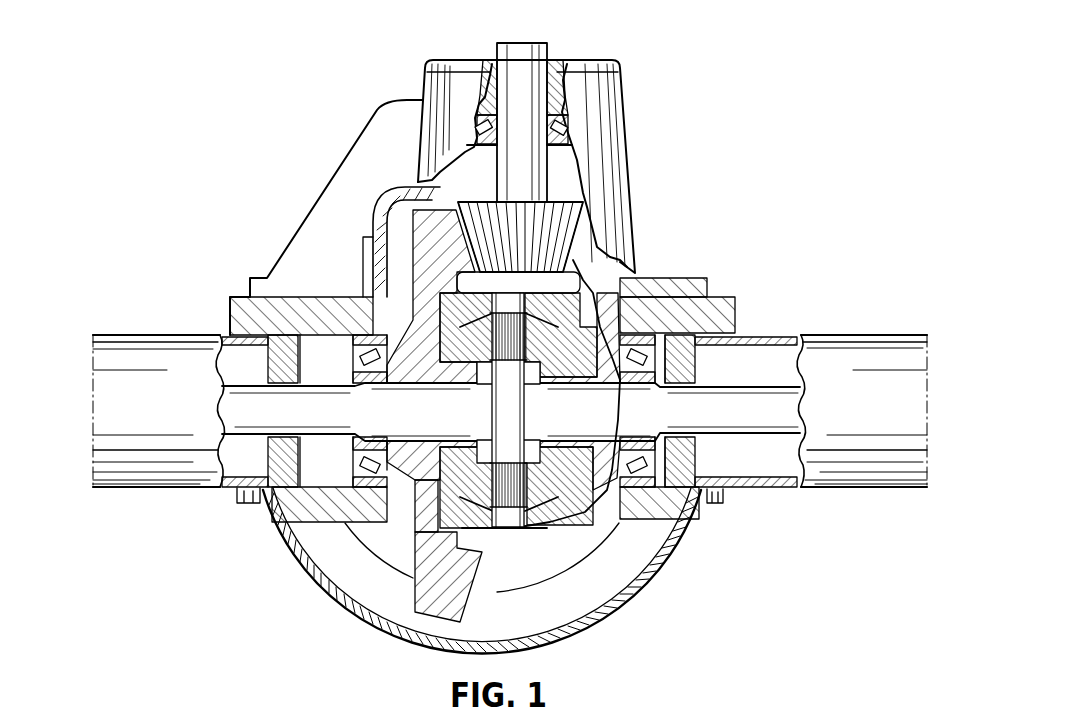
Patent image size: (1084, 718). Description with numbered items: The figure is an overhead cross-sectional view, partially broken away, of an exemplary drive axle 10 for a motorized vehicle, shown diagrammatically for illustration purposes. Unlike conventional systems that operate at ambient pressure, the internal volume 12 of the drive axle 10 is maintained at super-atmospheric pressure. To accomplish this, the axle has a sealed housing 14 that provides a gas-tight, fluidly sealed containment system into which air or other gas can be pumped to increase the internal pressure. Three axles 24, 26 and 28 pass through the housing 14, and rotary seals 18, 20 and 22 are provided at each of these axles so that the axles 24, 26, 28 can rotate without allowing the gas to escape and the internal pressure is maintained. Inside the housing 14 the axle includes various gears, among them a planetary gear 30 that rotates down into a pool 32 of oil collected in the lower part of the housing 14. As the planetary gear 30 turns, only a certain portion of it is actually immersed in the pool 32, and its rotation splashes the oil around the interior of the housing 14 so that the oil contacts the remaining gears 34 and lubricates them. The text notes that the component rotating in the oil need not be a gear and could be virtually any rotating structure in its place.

The drive axle 10 is at (726, 198).
The internal volume 12 is at (614, 594).
The sealed housing 14 is at (631, 609).
The rotary seal 18 is at (486, 100).
The rotary seal 20 is at (292, 458).
The rotary seal 22 is at (690, 457).
The axle 24 is at (523, 58).
The axle 26 is at (323, 392).
The axle 28 is at (743, 397).
The planetary gear 30 is at (420, 597).
The pool of oil 32 is at (402, 549).
The remaining gears 34 is at (536, 325).